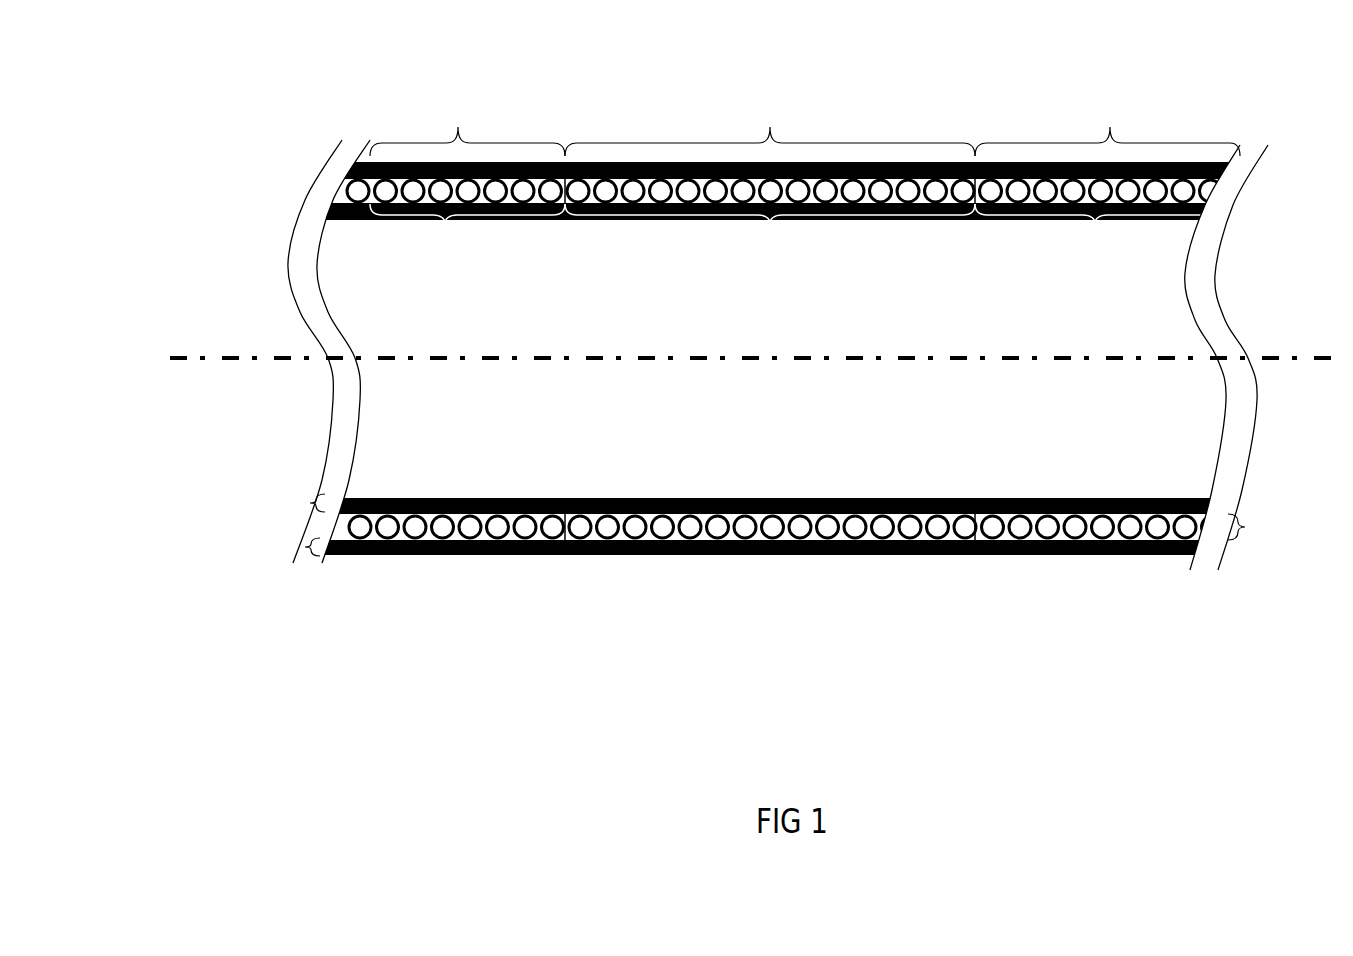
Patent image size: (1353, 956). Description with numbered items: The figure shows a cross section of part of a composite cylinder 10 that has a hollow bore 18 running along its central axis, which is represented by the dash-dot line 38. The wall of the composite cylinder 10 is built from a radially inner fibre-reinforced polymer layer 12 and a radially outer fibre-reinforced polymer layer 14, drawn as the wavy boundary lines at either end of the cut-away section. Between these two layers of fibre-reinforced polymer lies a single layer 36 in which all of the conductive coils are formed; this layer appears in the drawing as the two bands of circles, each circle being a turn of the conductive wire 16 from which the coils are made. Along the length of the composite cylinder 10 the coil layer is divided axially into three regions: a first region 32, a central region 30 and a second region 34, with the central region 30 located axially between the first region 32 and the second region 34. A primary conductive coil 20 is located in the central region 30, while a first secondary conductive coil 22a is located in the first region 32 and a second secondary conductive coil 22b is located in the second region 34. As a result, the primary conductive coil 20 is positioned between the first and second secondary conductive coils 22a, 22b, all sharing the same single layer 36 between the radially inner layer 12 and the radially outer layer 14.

The composite cylinder 10 is at (283, 147).
The radially inner fibre-reinforced polymer layer 12 is at (306, 502).
The radially outer fibre-reinforced polymer layer 14 is at (298, 547).
The conductive wire 16 is at (527, 521).
The hollow bore 18 is at (1155, 400).
The primary conductive coil 20 is at (770, 226).
The first secondary conductive coil 22a is at (445, 226).
The second secondary conductive coil 22b is at (1095, 226).
The central region 30 is at (770, 119).
The first region 32 is at (460, 119).
The second region 34 is at (1110, 119).
The single layer 36 is at (1250, 529).
The central axis 38 is at (224, 359).